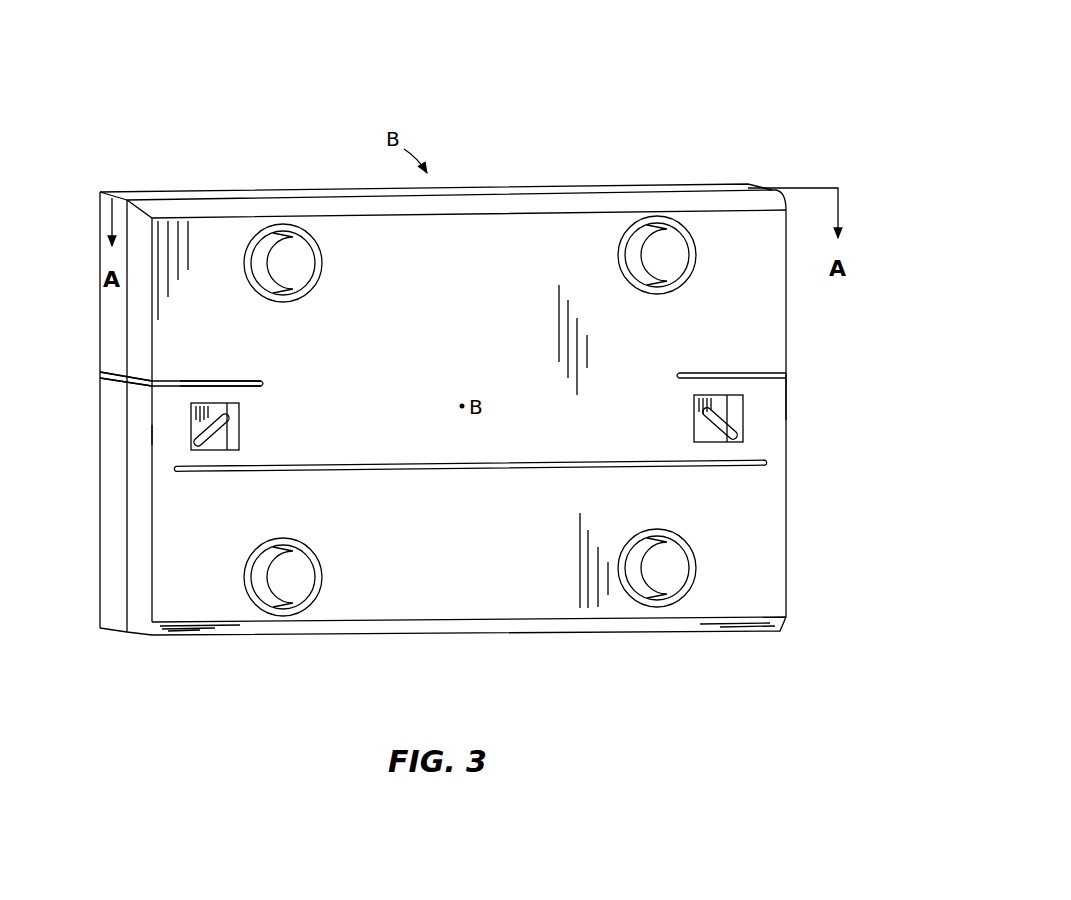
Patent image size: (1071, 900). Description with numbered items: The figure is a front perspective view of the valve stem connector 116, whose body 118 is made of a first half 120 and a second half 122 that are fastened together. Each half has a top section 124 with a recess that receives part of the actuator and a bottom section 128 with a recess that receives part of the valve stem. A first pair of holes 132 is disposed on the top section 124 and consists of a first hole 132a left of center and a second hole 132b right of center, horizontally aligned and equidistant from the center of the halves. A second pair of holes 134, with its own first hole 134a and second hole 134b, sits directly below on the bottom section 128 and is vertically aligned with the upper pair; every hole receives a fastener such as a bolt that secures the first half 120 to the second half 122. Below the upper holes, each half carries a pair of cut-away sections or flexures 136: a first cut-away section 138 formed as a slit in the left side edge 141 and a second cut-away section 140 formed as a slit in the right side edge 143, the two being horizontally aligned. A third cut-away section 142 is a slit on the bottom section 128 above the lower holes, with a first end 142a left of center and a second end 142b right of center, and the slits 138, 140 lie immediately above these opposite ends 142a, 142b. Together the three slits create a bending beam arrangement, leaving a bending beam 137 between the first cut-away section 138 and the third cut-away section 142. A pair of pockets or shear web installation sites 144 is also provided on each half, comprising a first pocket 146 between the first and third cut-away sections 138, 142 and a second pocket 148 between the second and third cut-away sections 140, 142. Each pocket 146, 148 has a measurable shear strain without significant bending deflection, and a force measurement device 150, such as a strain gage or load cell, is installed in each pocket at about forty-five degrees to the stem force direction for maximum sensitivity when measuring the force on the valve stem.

The valve stem connector 116 is at (413, 349).
The body 118 is at (146, 184).
The first half 120 is at (142, 636).
The second half 122 is at (135, 578).
The top section 124 is at (486, 285).
The bottom section 128 is at (486, 583).
The first pair of holes 132 is at (478, 275).
The first hole 132a is at (300, 287).
The second hole 132b is at (690, 272).
The second pair of holes 134 is at (475, 566).
The first hole 134a is at (310, 588).
The second hole 134b is at (690, 585).
The cut-away sections or flexures 136 is at (193, 388).
The bending beam 137 is at (163, 436).
The first cut-away section 138 is at (212, 380).
The second cut-away section 140 is at (700, 376).
The left side edge 141 is at (100, 387).
The third cut-away section 142 is at (478, 482).
The first end 142a is at (181, 474).
The second end 142b is at (718, 468).
The right side edge 143 is at (790, 390).
The pockets or shear web installation sites 144 is at (443, 450).
The first pocket 146 is at (240, 434).
The second pocket 148 is at (705, 428).
The force measurement device 150 is at (238, 424).